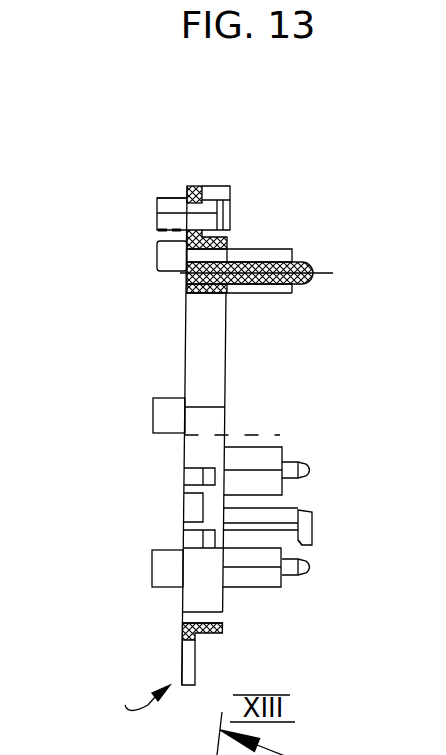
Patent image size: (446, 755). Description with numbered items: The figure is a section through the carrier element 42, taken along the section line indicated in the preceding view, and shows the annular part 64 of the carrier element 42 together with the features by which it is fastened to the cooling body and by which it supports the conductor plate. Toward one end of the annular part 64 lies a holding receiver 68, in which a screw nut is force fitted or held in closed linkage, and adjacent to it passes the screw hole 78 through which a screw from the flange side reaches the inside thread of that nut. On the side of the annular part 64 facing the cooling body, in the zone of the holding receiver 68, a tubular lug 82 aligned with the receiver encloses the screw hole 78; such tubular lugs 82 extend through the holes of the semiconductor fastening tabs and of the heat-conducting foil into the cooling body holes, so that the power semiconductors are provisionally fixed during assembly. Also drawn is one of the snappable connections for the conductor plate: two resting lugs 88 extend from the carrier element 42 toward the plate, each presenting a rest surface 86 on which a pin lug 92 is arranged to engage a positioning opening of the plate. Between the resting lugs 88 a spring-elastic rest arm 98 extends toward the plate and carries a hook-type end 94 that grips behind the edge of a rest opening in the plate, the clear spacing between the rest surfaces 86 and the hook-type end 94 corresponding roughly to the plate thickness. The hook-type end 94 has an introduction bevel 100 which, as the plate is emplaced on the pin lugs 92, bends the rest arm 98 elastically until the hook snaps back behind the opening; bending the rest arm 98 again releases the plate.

The carrier element 42 is at (134, 693).
The annular part 64 is at (197, 340).
The holding receiver 68 is at (230, 212).
The hole 78 is at (163, 212).
The tubular lug 82 is at (178, 198).
The rest surface 86 is at (290, 447).
The resting lug 88 is at (262, 253).
The pin lug 92 is at (308, 467).
The hook-type end 94 is at (307, 520).
The rest arm 98 is at (292, 252).
The introduction bevel 100 is at (313, 543).